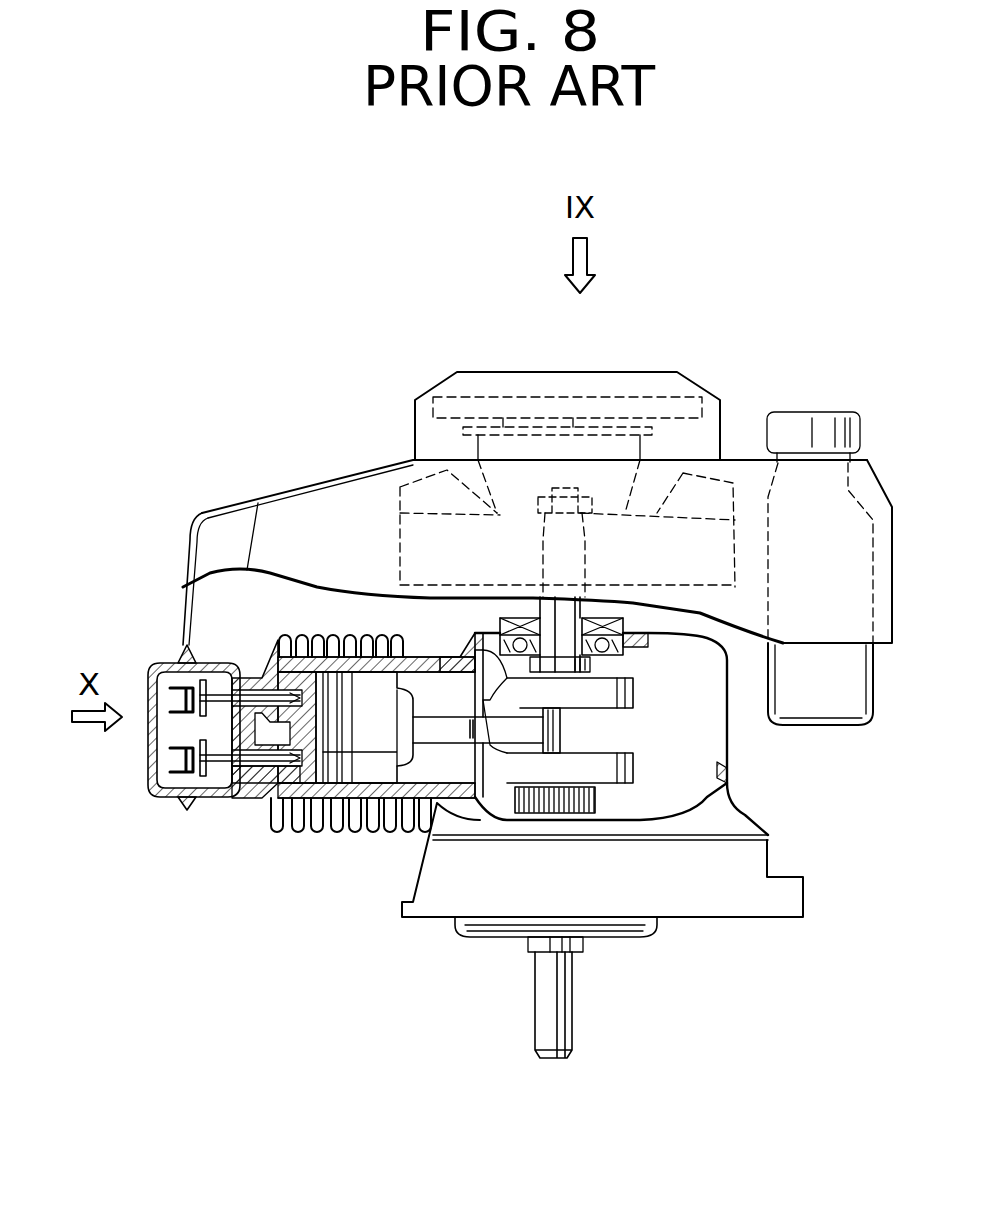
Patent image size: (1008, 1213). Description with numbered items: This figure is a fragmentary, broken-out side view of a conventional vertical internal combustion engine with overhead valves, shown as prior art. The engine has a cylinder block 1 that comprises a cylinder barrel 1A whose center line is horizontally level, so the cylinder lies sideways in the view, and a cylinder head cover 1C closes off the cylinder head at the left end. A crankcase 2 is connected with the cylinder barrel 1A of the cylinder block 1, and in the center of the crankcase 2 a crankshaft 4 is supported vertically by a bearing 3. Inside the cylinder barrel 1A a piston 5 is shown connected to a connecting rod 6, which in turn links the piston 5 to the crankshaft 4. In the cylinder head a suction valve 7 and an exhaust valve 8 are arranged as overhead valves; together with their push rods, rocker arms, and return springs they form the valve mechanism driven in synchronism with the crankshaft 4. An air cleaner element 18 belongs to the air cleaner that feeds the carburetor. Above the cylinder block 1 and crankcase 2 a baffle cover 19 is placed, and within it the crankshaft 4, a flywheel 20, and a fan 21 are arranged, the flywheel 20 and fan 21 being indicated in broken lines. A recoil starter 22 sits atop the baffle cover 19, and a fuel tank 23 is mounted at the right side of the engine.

The cylinder block 1 is at (310, 618).
The cylinder barrel 1A is at (433, 808).
The cylinder head cover 1C is at (152, 790).
The crankcase 2 is at (713, 720).
The bearing 3 is at (640, 687).
The crankshaft 4 is at (507, 610).
The piston 5 is at (372, 760).
The connecting rod 6 is at (432, 730).
The suction valve 7 is at (270, 690).
The exhaust valve 8 is at (277, 798).
The air cleaner element 18 is at (273, 822).
The baffle cover 19 is at (227, 520).
The flywheel 20 is at (398, 545).
The fan 21 is at (400, 527).
The recoil starter 22 is at (643, 453).
The fuel tank 23 is at (848, 697).